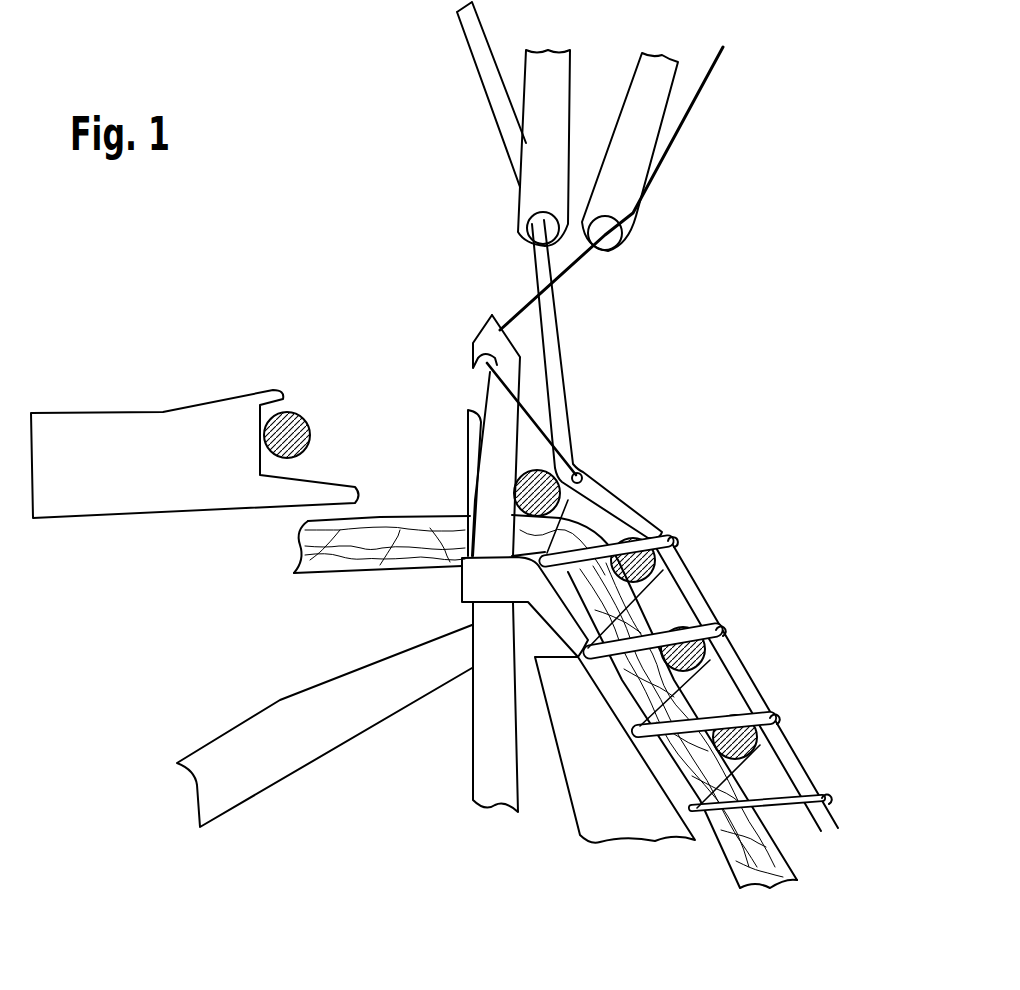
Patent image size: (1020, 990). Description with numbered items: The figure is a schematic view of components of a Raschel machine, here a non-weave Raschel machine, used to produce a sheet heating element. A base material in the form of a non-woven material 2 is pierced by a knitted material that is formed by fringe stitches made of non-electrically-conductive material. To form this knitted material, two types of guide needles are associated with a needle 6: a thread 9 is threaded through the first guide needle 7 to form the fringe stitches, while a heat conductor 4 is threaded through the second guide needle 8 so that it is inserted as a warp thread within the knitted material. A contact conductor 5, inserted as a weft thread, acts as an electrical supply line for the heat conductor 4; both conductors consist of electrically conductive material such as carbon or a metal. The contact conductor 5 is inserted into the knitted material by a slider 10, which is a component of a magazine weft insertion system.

The non-woven material 2 is at (380, 580).
The heat conductor 4 is at (480, 53).
The contact conductor 5 is at (297, 415).
The needle 6 is at (473, 342).
The first guide needle 7 is at (623, 208).
The second guide needle 8 is at (530, 210).
The thread 9 is at (687, 113).
The slider 10 is at (88, 423).